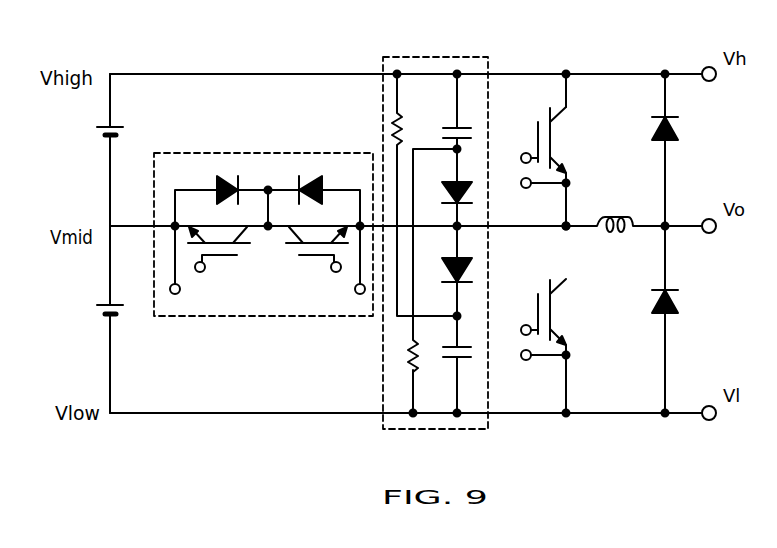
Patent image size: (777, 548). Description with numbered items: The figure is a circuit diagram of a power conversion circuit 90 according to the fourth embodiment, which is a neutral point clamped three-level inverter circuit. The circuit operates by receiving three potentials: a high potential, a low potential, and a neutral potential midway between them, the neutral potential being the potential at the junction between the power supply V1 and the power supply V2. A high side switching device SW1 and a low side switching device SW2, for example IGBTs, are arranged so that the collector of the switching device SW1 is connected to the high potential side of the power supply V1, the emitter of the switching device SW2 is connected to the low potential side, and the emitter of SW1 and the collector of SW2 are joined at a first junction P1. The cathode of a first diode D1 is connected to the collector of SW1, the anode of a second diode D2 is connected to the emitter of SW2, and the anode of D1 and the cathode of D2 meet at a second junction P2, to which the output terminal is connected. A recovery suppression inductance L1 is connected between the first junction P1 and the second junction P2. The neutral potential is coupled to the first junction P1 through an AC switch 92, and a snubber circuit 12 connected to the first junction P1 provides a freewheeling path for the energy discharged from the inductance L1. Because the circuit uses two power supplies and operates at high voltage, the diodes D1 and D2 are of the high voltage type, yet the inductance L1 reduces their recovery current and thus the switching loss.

The power conversion circuit 90 is at (78, 37).
The AC switch 92 is at (256, 153).
The snubber circuit 12 is at (470, 55).
The high side switching device SW1 is at (563, 139).
The low side switching device SW2 is at (563, 314).
The first diode D1 is at (682, 126).
The second diode D2 is at (682, 299).
The recovery suppression inductance L1 is at (607, 216).
The first junction P1 is at (570, 231).
The second junction P2 is at (672, 231).
The power supply V1 is at (97, 130).
The power supply V2 is at (97, 308).